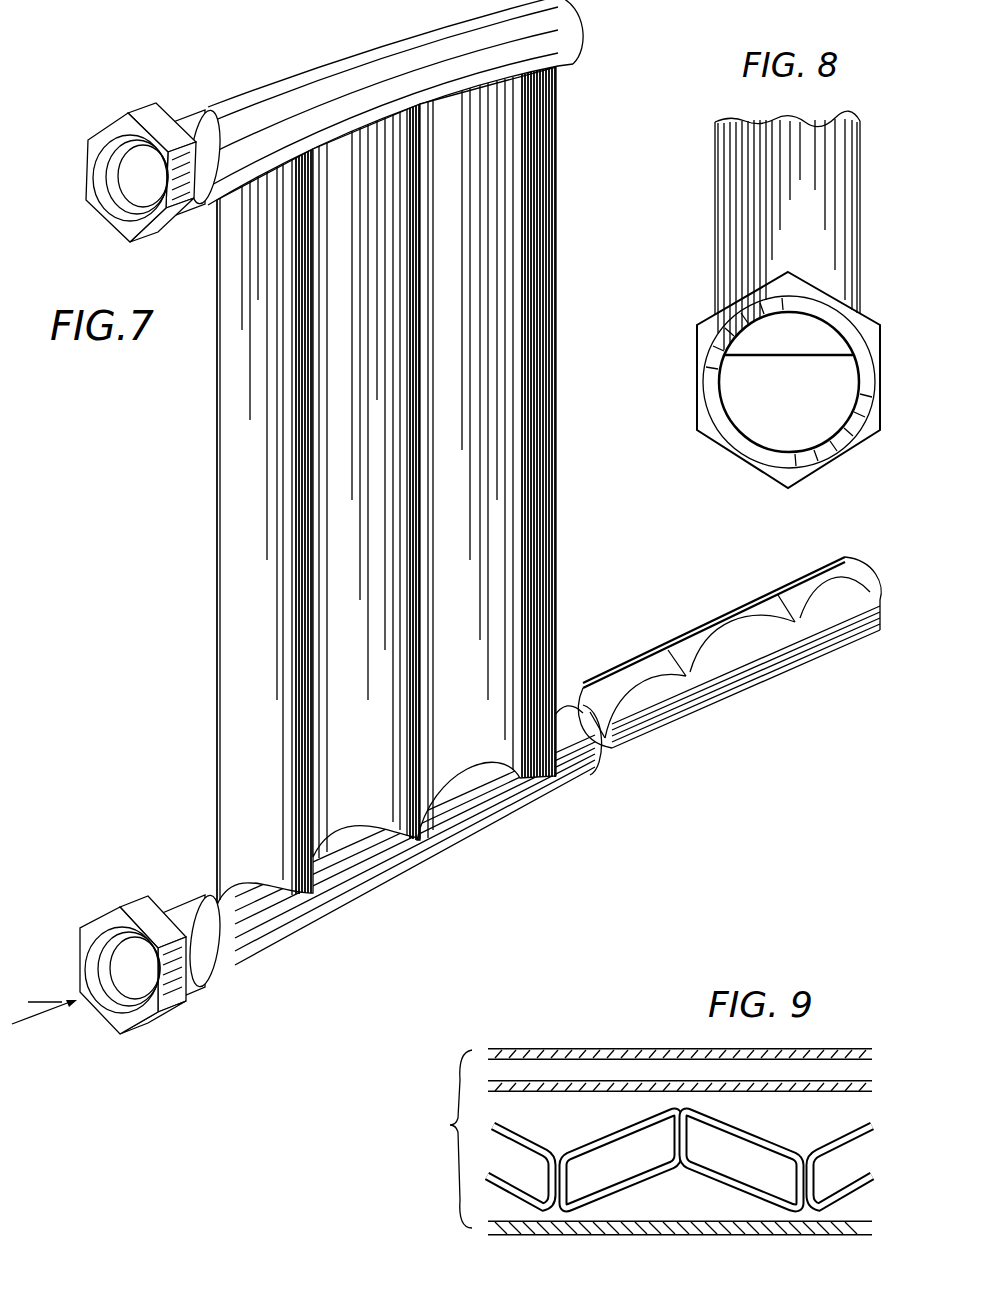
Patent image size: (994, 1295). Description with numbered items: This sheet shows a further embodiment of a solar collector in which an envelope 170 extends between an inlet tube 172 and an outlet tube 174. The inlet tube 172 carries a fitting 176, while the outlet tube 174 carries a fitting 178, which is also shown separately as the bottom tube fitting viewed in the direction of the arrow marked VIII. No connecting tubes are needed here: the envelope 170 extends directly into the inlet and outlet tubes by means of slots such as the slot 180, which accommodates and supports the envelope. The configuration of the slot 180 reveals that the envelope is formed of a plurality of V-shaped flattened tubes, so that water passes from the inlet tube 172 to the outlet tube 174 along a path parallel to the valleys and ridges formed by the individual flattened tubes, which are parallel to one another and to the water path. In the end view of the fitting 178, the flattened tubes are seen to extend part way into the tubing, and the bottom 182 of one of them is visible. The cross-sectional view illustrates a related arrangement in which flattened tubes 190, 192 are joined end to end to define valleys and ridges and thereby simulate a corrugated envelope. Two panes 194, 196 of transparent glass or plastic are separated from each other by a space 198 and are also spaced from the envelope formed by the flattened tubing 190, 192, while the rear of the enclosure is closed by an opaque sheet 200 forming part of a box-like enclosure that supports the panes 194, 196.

In FIG. 7, the envelope 170 is at (232, 630).
In FIG. 8, the envelope 170 is at (728, 206).
In FIG. 7, the inlet tube 172 is at (310, 80).
In FIG. 7, the outlet tube 174 is at (298, 920).
In FIG. 7, the fitting 176 is at (157, 117).
In FIG. 7, the fitting 178 is at (157, 1017).
In FIG. 7, the slot 180 is at (806, 647).
In FIG. 8, the bottom of flattened tube 182 is at (785, 345).
In FIG. 9, the flattened tube 190 is at (727, 1187).
In FIG. 9, the flattened tube 192 is at (600, 1204).
In FIG. 9, the pane 194 is at (548, 1050).
In FIG. 9, the pane 196 is at (608, 1090).
In FIG. 9, the space 198 is at (662, 1070).
In FIG. 9, the opaque sheet 200 is at (787, 1228).